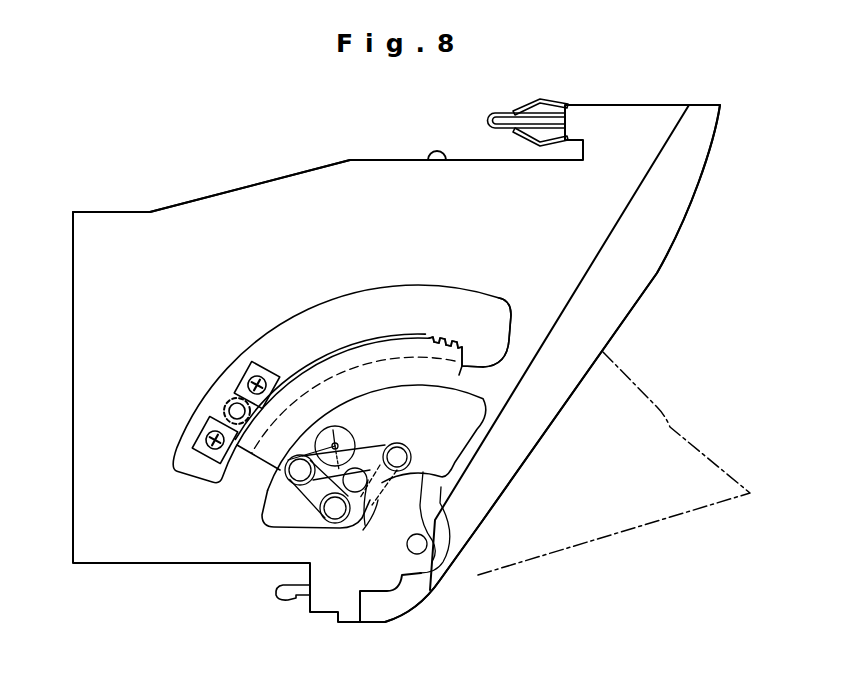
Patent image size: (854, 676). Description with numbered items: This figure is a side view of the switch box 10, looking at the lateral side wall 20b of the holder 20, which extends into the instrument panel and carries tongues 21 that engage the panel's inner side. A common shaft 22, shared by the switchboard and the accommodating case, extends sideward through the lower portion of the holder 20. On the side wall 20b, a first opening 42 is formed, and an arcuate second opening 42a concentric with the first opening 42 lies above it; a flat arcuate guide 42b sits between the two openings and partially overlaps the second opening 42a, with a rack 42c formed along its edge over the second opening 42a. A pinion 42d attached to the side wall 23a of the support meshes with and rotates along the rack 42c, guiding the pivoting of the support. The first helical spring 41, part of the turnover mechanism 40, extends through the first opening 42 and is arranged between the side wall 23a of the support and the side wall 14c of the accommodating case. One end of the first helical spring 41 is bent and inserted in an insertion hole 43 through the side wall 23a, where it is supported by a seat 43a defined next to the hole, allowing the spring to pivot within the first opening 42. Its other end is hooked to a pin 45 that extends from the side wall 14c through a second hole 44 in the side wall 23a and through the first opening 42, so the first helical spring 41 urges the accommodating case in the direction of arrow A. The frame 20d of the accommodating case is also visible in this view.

The switch box 10 is at (205, 125).
The holder 20 is at (171, 206).
The lateral side wall of the holder 20b is at (278, 190).
The frame 20d is at (657, 225).
The tongues 21 is at (503, 130).
The common shaft 22 is at (422, 556).
The side wall of the support 23a is at (467, 302).
The turnover mechanism 40 is at (210, 529).
The first helical spring 41 is at (273, 488).
The first opening 42 is at (413, 483).
The second opening 42a is at (327, 303).
The guide 42b is at (460, 380).
The rack 42c is at (445, 336).
The pinion 42d is at (217, 368).
The insertion hole 43 is at (346, 426).
The seat 43a is at (333, 430).
The second hole 44 is at (387, 437).
The pin 45 is at (322, 520).
The side wall of the accommodating case 14c is at (388, 545).